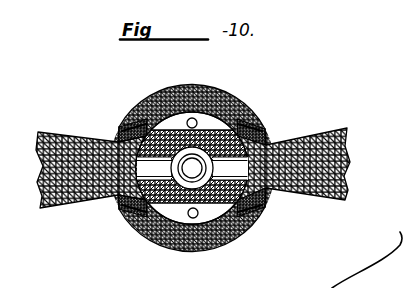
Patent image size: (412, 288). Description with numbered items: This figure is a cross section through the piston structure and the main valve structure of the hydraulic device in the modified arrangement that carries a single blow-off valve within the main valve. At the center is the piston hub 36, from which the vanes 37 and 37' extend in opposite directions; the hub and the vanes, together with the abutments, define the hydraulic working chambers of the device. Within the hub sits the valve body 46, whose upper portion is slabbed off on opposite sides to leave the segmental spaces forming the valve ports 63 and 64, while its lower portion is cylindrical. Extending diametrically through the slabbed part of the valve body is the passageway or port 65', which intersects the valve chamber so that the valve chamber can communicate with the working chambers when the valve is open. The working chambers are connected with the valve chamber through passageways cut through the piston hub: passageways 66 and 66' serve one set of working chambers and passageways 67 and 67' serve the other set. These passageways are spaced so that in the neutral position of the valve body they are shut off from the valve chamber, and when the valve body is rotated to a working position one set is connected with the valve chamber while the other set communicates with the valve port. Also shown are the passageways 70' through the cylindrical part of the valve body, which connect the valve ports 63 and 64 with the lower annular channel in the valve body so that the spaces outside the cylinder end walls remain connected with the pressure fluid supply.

The hub 36 is at (207, 238).
The vane 37 is at (84, 191).
The vane 37' is at (311, 164).
The valve body 46 is at (167, 190).
The port 63 is at (208, 122).
The port 64 is at (215, 210).
The passageway or port 65' is at (279, 101).
The passageway 66 is at (108, 223).
The passageway 66' is at (277, 129).
The passageway 67 is at (279, 215).
The passageway 67' is at (116, 113).
The passageways 70' is at (174, 170).